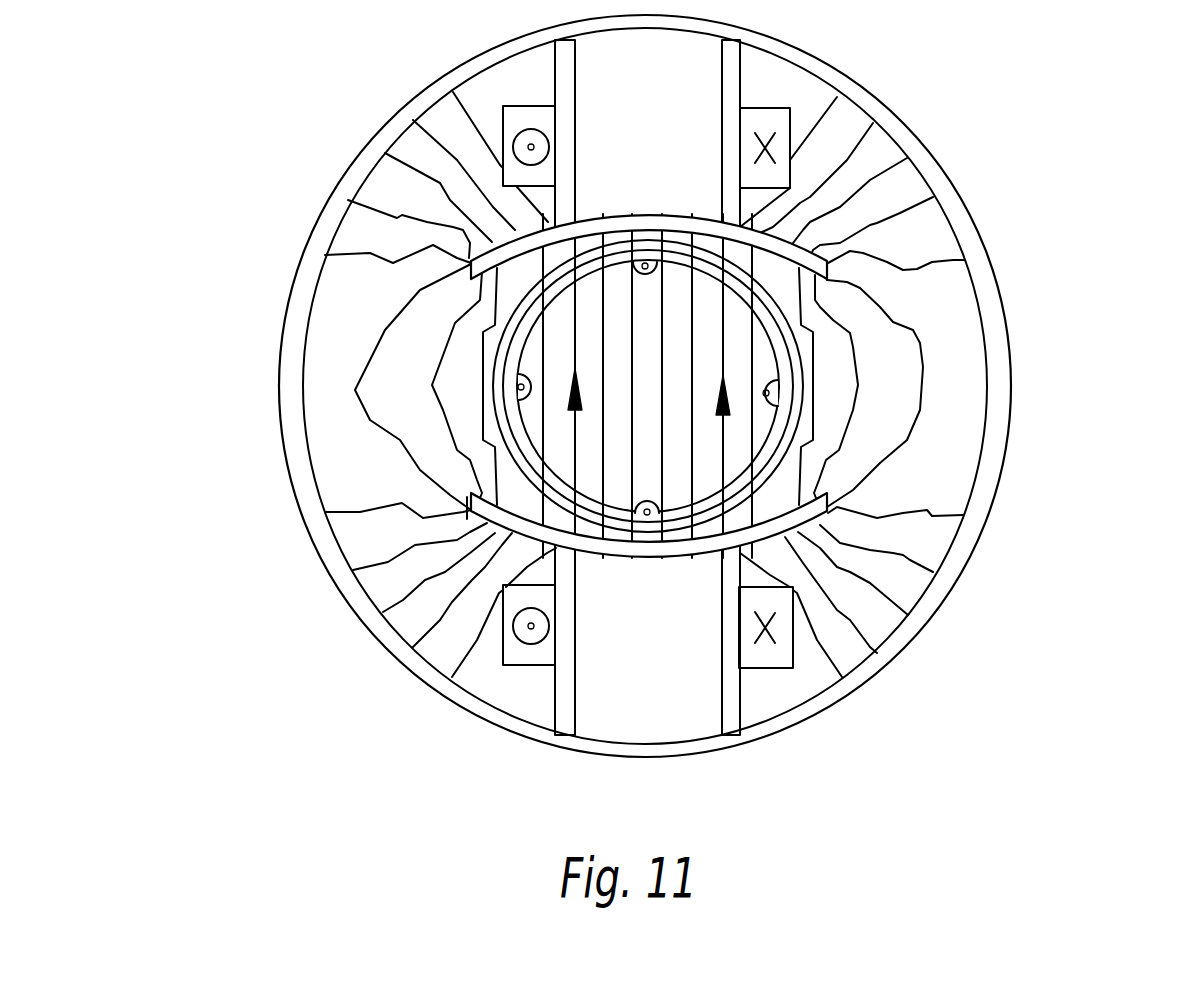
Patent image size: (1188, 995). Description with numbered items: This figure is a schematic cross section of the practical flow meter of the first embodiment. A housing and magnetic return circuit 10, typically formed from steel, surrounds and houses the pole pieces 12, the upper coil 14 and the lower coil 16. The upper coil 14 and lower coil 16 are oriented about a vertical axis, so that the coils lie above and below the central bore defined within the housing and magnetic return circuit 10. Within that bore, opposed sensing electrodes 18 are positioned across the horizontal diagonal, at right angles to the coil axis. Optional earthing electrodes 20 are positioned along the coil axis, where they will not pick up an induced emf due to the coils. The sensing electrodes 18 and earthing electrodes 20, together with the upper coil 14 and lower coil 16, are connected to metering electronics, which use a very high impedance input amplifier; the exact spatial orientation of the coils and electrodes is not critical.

The housing and magnetic return circuit 10 is at (383, 635).
The pole pieces 12 is at (525, 527).
The upper coil 14 is at (773, 127).
The lower coil 16 is at (773, 652).
The sensing electrodes 18 is at (772, 386).
The earthing electrodes 20 is at (648, 510).